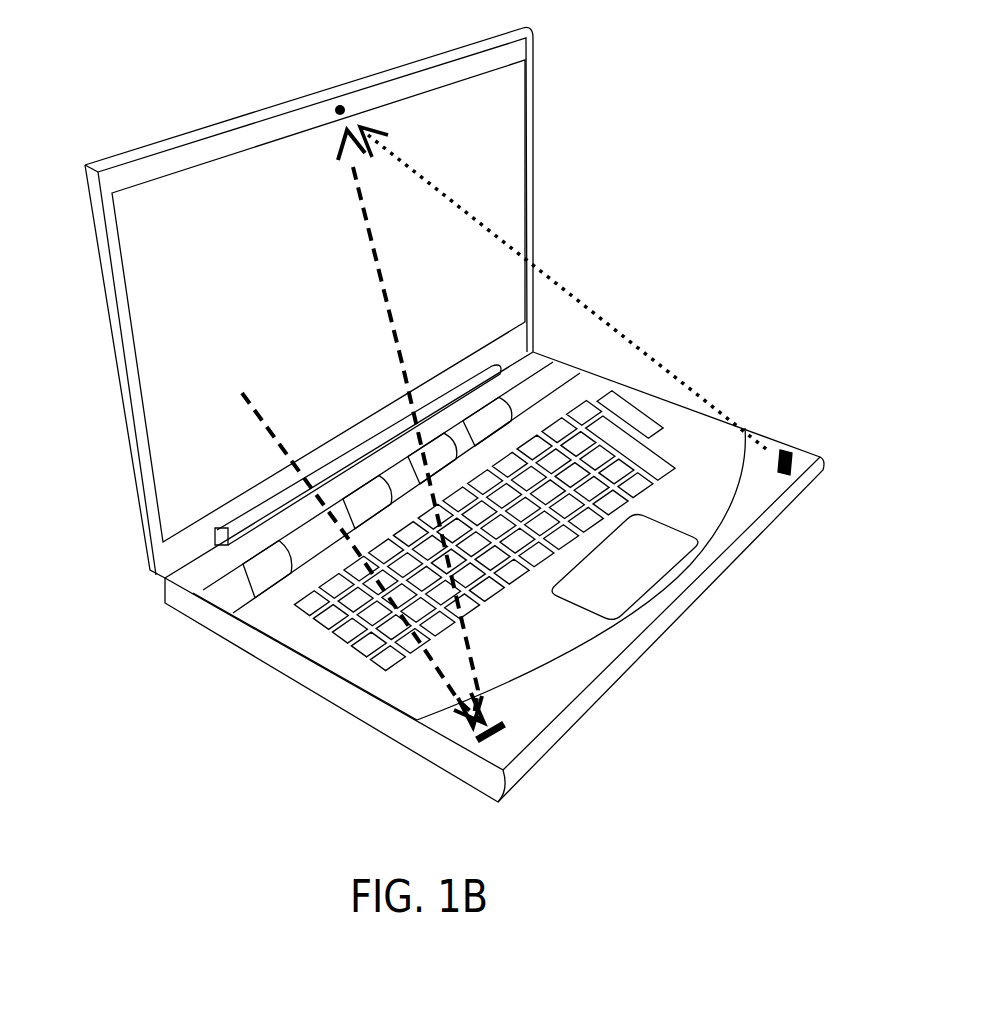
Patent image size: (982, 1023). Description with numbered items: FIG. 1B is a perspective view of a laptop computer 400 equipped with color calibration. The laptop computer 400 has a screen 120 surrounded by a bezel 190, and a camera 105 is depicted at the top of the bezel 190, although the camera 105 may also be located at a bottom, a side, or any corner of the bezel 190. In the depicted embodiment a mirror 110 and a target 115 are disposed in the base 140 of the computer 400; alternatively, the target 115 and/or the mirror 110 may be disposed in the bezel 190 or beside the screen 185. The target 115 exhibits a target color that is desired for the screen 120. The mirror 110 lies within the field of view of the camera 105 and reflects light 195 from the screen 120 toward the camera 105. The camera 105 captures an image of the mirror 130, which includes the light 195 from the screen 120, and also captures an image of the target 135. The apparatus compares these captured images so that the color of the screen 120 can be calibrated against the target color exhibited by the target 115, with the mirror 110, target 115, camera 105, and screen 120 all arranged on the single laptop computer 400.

The camera 105 is at (323, 103).
The mirror 110 is at (470, 737).
The target 115 is at (788, 444).
The screen 120 is at (272, 305).
The image of the mirror 130 is at (407, 393).
The image of the target 135 is at (603, 321).
The base 140 is at (697, 490).
The screen side 185 is at (523, 370).
The bezel 190 is at (532, 35).
The light 195 is at (281, 452).
The laptop computer 400 is at (167, 603).